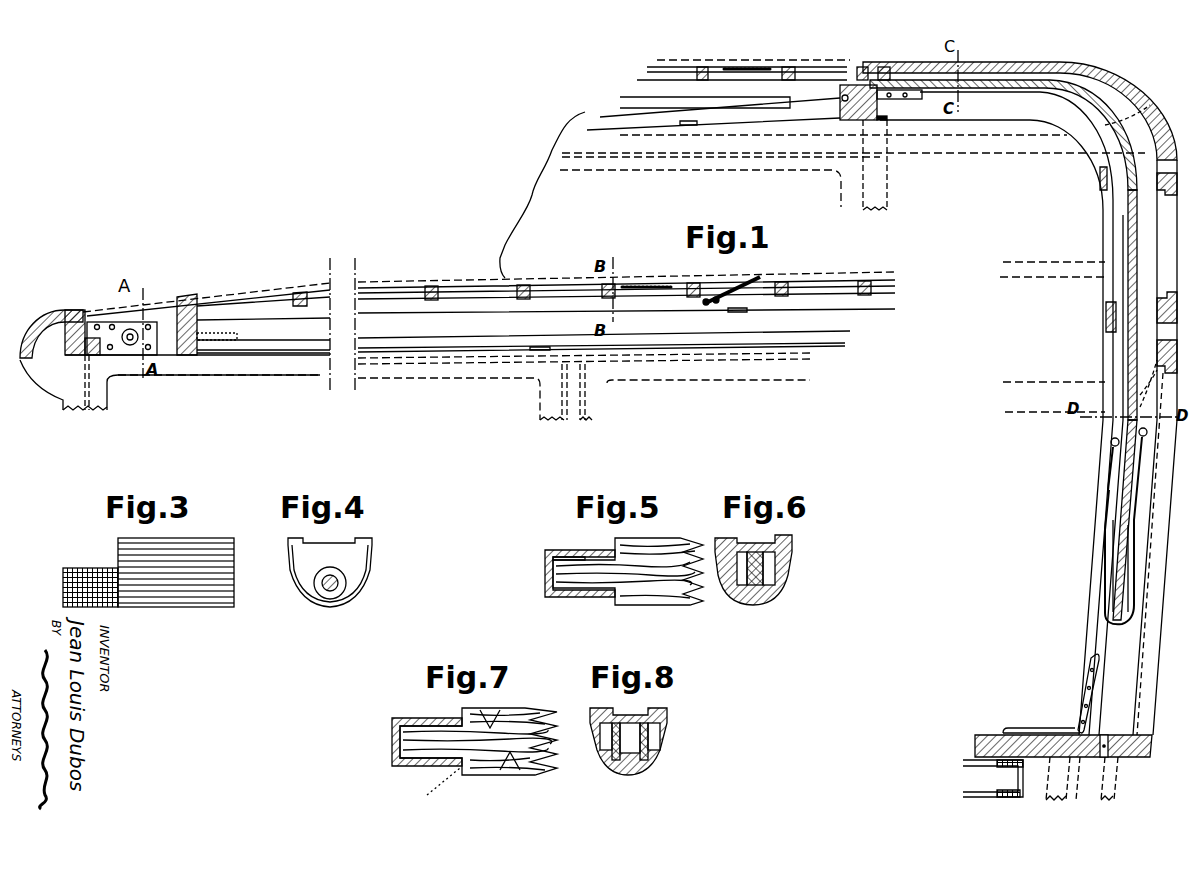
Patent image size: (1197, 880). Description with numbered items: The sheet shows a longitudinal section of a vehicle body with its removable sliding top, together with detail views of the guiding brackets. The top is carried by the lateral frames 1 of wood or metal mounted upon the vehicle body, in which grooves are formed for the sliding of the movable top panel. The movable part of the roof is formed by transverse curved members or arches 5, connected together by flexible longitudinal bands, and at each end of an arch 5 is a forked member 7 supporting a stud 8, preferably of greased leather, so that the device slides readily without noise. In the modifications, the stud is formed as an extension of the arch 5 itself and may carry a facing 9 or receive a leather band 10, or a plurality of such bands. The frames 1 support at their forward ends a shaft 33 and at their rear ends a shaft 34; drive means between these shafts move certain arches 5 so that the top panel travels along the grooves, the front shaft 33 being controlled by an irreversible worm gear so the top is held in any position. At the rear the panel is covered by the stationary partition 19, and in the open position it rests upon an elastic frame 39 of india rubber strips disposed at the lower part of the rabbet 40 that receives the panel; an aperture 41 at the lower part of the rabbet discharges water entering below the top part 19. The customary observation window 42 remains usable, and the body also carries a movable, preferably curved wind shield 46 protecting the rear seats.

In FIG. 1, the lateral frame 1 is at (387, 307).
In FIG. 1, the curved member or arch 5 is at (300, 302).
In FIG. 5, the curved member or arch 5 is at (666, 548).
In FIG. 6, the curved member or arch 5 is at (785, 553).
In FIG. 7, the curved member or arch 5 is at (498, 722).
In FIG. 3, the forked member 7 is at (184, 558).
In FIG. 4, the forked member 7 is at (361, 561).
In FIG. 3, the stud 8 is at (81, 567).
In FIG. 5, the stud 8 is at (553, 577).
In FIG. 7, the stud 8 is at (405, 742).
In FIG. 5, the facing 9 is at (558, 556).
In FIG. 6, the leather band 10 is at (770, 573).
In FIG. 8, the leather band 10 is at (650, 742).
In FIG. 1, the stationary partition 19 is at (983, 70).
In FIG. 1, the front shaft 33 is at (130, 340).
In FIG. 1, the rear shaft 34 is at (846, 90).
In FIG. 1, the elastic frame 39 is at (1110, 532).
In FIG. 1, the rabbet 40 is at (1150, 680).
In FIG. 1, the aperture 41 is at (1108, 747).
In FIG. 1, the observation aperture or window 42 is at (1175, 244).
In FIG. 1, the movable wind shield 46 is at (762, 276).